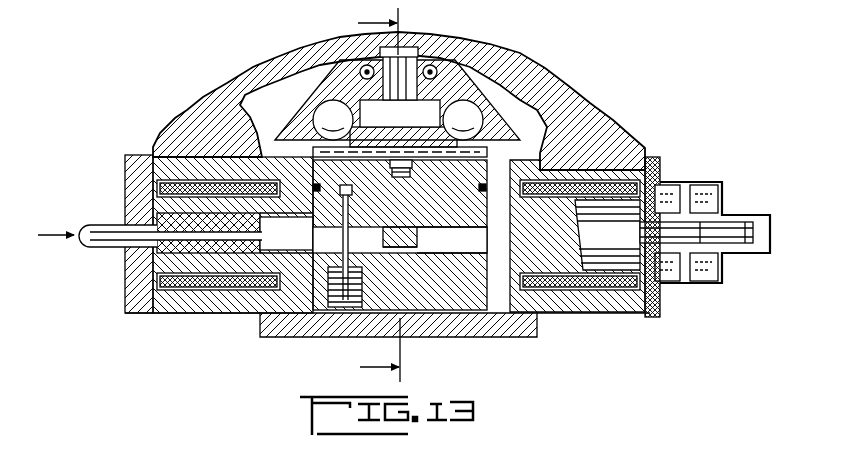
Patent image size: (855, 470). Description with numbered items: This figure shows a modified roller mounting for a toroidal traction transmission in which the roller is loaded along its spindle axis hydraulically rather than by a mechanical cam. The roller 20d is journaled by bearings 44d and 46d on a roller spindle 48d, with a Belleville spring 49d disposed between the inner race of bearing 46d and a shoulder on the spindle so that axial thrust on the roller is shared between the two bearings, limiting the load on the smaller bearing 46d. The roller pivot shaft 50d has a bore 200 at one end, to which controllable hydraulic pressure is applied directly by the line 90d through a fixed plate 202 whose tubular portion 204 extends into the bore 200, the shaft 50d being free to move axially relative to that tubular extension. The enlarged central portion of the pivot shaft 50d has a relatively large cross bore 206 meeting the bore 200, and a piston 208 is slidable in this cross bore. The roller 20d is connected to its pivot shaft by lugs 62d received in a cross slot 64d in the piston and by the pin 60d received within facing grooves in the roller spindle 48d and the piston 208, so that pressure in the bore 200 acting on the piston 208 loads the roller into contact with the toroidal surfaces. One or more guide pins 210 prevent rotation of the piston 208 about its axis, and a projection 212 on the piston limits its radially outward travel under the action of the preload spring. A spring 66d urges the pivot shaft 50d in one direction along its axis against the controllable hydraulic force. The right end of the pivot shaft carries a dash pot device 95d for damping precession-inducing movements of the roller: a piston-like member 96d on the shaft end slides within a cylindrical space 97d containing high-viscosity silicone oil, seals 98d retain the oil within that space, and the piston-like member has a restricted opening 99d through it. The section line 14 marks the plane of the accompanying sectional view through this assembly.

The section line 14- 14 is at (390, 21).
The roller 20d is at (522, 125).
The bearing 44d is at (346, 125).
The bearing 46d is at (442, 75).
The roller spindle 48d is at (428, 125).
The spring 49d is at (358, 80).
The roller pivot shaft 50d is at (550, 238).
The pin 60d is at (358, 155).
The lugs 62d is at (385, 173).
The cross slot 64d is at (404, 176).
The spring 66d is at (667, 287).
The line 90d is at (113, 248).
The dash pot device 95d is at (676, 178).
The piston-like member 96d is at (720, 193).
The cylindrical space 97d is at (720, 272).
The seals 98d is at (652, 233).
The restricted opening 99d is at (693, 187).
The bore 200 is at (306, 217).
The fixed plate 202 is at (132, 182).
The tubular portion 204 is at (250, 248).
The cross bore 206 is at (486, 237).
The piston 208 is at (418, 222).
The guide pin 210 is at (352, 256).
The projection 212 is at (407, 246).